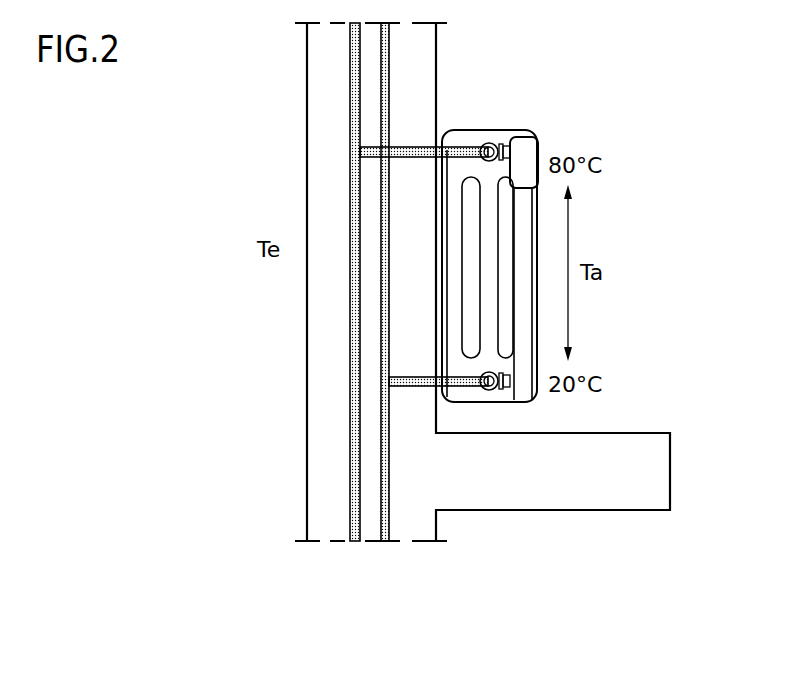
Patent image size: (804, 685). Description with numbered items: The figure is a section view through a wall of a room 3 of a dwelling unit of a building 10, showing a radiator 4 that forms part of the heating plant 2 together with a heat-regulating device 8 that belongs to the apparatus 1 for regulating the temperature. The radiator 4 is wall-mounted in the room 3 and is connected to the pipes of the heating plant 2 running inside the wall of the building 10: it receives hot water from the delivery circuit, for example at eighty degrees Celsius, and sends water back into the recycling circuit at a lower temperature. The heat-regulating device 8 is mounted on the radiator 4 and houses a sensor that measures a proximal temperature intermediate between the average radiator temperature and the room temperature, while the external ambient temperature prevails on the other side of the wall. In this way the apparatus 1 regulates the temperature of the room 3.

The building 10 is at (300, 105).
The heating plant 2 is at (466, 123).
The apparatus for regulating the temperature 1 is at (528, 122).
The heat-regulating device 8 is at (528, 158).
The radiator 4 is at (512, 400).
The room 3 is at (642, 245).